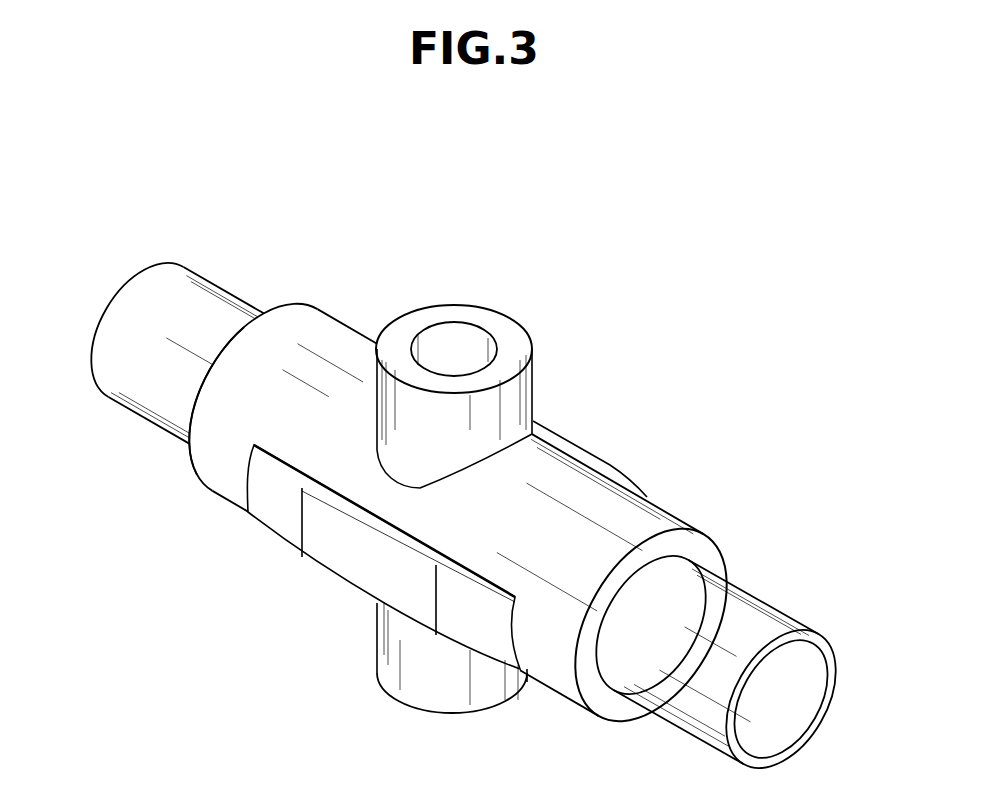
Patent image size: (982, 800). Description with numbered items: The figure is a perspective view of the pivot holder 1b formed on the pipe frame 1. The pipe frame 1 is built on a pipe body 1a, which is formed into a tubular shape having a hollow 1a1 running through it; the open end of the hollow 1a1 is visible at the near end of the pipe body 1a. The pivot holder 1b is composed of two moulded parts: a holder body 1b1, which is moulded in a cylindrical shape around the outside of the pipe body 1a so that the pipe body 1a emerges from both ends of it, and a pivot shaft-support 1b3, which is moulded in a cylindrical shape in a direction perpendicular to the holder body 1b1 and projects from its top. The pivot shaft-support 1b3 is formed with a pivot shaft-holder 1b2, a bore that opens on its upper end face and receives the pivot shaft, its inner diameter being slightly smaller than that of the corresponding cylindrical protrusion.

The pipe frame 1 is at (164, 262).
The pipe body 1a is at (138, 393).
The hollow 1a1 is at (793, 713).
The pivot holder 1b is at (670, 512).
The holder body 1b1 is at (313, 320).
The pivot shaft-holder 1b2 is at (450, 337).
The pivot shaft-support 1b3 is at (533, 387).